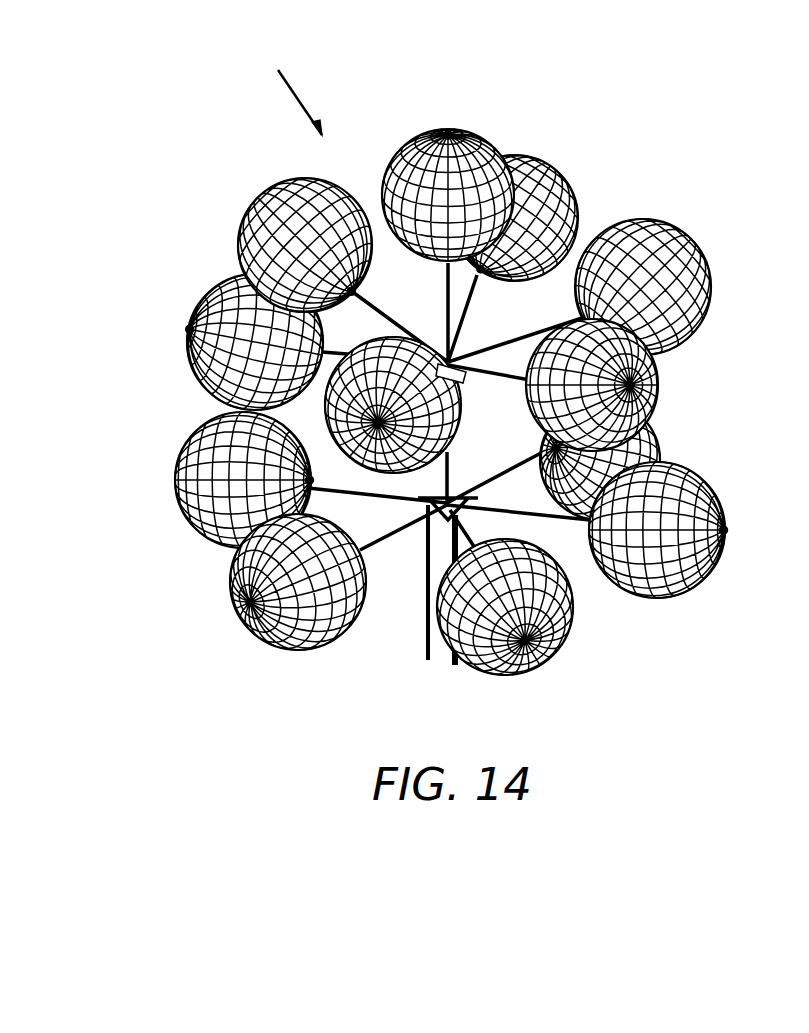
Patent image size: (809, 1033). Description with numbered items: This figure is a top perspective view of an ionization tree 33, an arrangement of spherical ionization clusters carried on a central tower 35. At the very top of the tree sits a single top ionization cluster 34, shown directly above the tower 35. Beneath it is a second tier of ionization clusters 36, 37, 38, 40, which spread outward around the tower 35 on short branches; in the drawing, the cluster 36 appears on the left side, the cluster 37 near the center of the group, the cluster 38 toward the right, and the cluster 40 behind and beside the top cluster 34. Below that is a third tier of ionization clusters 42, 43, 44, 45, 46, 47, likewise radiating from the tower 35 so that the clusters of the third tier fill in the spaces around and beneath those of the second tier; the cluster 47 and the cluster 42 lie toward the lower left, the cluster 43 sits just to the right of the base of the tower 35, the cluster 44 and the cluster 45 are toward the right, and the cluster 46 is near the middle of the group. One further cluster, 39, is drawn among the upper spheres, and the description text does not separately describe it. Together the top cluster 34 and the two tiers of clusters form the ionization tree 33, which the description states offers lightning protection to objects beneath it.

The ionization tree 33 is at (288, 84).
The top ionization cluster 34 is at (410, 157).
The tower 35 is at (425, 632).
The ionization cluster 36 is at (212, 300).
The ionization cluster 37 is at (458, 428).
The ionization cluster 38 is at (658, 372).
The ball 39 is at (665, 222).
The ionization cluster 40 is at (548, 175).
The ionization cluster 42 is at (310, 648).
The ionization cluster 43 is at (572, 630).
The ionization cluster 44 is at (697, 587).
The ionization cluster 45 is at (660, 433).
The ionization cluster 46 is at (413, 346).
The ionization cluster 47 is at (215, 540).